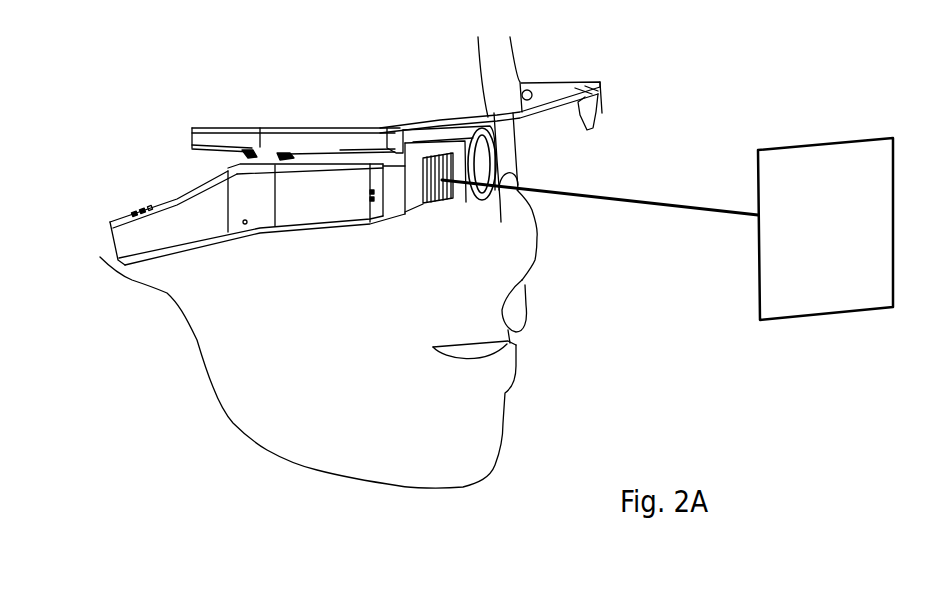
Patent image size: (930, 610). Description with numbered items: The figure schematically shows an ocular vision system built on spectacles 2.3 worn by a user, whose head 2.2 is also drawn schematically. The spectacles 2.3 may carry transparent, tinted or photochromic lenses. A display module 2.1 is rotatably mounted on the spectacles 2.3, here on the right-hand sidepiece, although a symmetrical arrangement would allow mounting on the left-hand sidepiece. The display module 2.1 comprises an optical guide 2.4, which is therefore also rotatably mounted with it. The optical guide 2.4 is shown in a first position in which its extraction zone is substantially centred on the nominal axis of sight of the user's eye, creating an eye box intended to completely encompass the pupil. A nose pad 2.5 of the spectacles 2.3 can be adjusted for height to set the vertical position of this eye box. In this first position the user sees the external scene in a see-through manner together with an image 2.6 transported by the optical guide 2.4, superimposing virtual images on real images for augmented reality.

The display module 2.1 is at (137, 248).
The head 2.2 is at (318, 470).
The spectacles 2.3 is at (231, 128).
The optical guide 2.4 is at (412, 207).
The nose pad 2.5 is at (462, 204).
The image 2.6 is at (823, 142).